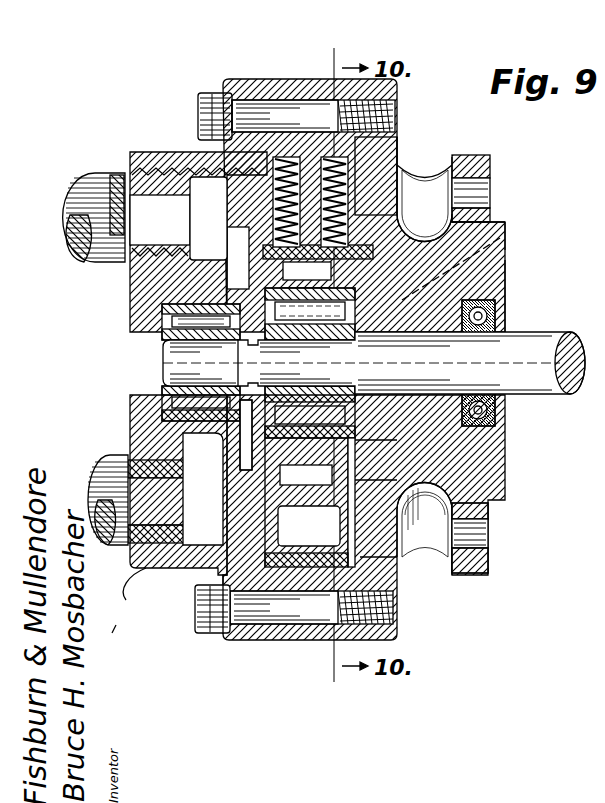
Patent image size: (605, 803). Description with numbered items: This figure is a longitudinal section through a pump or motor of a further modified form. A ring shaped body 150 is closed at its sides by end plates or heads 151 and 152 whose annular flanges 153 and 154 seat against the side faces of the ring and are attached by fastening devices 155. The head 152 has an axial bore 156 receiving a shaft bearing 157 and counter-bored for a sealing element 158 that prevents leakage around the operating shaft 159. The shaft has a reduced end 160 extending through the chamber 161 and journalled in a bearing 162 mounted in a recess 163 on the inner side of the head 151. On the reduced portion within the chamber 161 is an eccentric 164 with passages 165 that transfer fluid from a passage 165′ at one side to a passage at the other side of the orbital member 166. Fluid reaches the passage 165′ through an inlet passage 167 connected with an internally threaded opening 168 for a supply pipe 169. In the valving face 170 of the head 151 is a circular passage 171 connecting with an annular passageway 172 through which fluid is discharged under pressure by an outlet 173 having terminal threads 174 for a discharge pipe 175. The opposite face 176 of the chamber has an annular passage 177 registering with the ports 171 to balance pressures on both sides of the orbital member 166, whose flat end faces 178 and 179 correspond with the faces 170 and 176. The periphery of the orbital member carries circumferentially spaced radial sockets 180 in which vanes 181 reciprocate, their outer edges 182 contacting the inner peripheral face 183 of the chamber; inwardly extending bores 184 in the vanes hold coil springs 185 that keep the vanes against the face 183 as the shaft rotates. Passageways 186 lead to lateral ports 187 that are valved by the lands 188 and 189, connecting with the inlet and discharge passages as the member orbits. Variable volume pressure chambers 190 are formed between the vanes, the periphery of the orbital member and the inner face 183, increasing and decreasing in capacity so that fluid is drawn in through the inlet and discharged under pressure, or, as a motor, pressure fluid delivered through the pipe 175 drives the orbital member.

The ring shaped body 150 is at (316, 82).
The head 151 is at (132, 297).
The head 152 is at (490, 264).
The annular flange 153 is at (230, 642).
The annular flange 154 is at (396, 643).
The fastening devices 155 is at (206, 620).
The axial bore 156 is at (470, 292).
The shaft bearing 157 is at (362, 406).
The sealing element 158 is at (500, 308).
The operating shaft 159 is at (582, 338).
The reduced end 160 is at (163, 371).
The chamber 161 is at (380, 567).
The bearing 162 is at (160, 419).
The recess 163 is at (162, 332).
The eccentric 164 is at (160, 395).
The passages 165 is at (360, 418).
The passage 165′ is at (162, 352).
The orbital member 166 is at (430, 551).
The inlet passage 167 is at (217, 567).
The internally threaded opening 168 is at (136, 461).
The supply pipe 169 is at (130, 550).
The valving face 170 is at (332, 622).
The circular passage 171 is at (76, 250).
The annular passageway 172 is at (200, 268).
The outlet 173 is at (276, 182).
The terminal threads 174 is at (146, 182).
The discharge pipe 175 is at (76, 197).
The opposite face 176 is at (488, 572).
The annular passage 177 is at (368, 462).
The flat end face 178 is at (131, 625).
The flat end face 179 is at (355, 498).
The radial sockets 180 is at (424, 189).
The vanes 181 is at (402, 172).
The outer edges 182 is at (398, 116).
The inner peripheral face 183 is at (322, 142).
The bores 184 is at (380, 158).
The coil springs 185 is at (290, 163).
The passageways 186 is at (450, 295).
The lateral ports 187 is at (500, 242).
The land 188 is at (150, 437).
The land 189 is at (309, 526).
The variable volume pressure chambers 190 is at (394, 594).